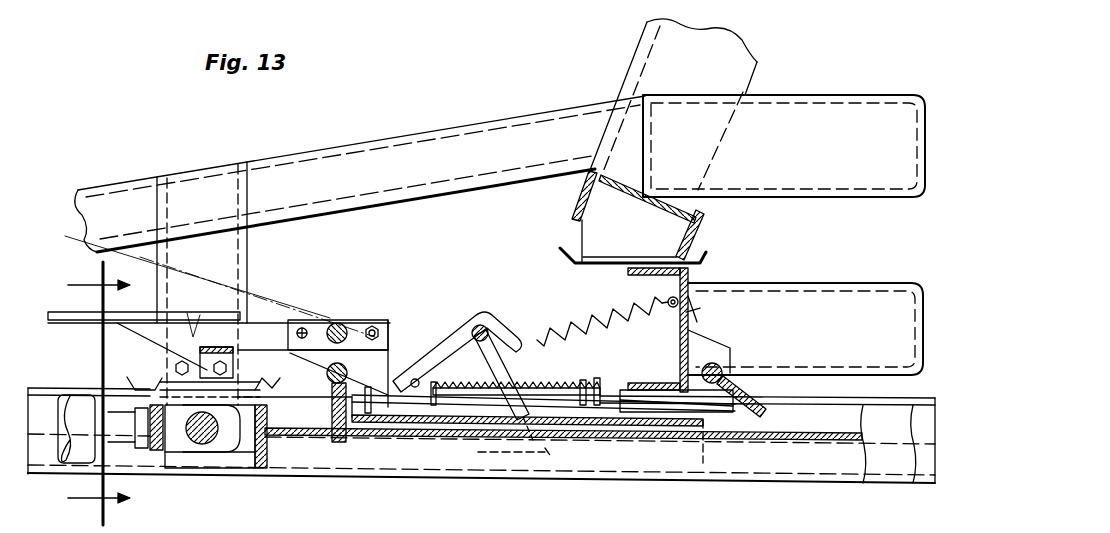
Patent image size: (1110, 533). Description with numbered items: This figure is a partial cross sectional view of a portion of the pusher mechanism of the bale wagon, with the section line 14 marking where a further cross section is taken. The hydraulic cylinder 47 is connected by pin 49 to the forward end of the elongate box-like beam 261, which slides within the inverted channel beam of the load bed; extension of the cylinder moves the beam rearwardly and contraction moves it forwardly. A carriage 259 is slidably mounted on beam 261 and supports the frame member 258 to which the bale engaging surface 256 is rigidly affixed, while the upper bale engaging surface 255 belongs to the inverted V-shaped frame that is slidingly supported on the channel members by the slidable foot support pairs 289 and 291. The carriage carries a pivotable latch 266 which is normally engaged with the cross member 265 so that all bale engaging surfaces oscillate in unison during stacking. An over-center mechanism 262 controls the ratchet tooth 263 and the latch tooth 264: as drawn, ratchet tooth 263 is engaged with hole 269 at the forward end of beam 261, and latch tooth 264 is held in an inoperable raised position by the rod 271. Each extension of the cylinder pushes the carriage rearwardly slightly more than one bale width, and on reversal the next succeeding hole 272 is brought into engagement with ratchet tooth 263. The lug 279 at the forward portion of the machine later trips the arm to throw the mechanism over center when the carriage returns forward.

The section line 14- 14 is at (85, 397).
The hydraulic cylinder 47 is at (72, 410).
The pin 49 is at (202, 446).
The bale engaging surface 255 is at (905, 95).
The bale engaging surface 256 is at (905, 283).
The frame member 258 is at (678, 348).
The carriage 259 is at (698, 418).
The elongate box-like beam 261 is at (865, 437).
The over-center mechanism 262 is at (490, 292).
The ratchet tooth 263 is at (332, 414).
The latch tooth 264 is at (746, 389).
The cross member 265 is at (240, 363).
The pivotable latch 266 is at (290, 323).
The hole 269 is at (345, 437).
The rod 271 is at (603, 388).
The hole 272 is at (833, 418).
The lug 279 is at (498, 454).
The slidable foot support pair 289 is at (150, 378).
The slidable foot support pair 291 is at (703, 258).